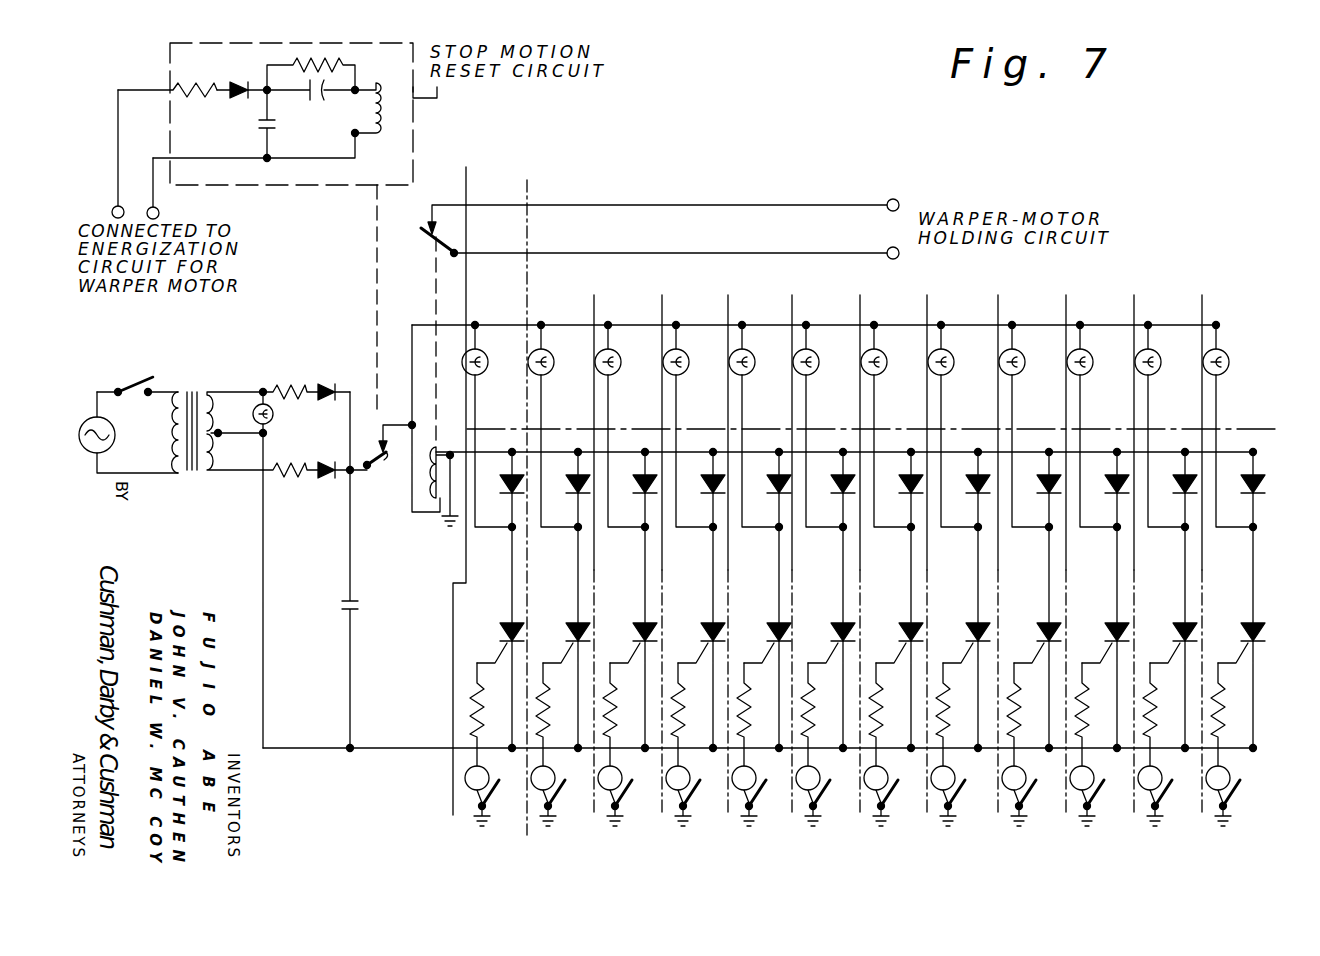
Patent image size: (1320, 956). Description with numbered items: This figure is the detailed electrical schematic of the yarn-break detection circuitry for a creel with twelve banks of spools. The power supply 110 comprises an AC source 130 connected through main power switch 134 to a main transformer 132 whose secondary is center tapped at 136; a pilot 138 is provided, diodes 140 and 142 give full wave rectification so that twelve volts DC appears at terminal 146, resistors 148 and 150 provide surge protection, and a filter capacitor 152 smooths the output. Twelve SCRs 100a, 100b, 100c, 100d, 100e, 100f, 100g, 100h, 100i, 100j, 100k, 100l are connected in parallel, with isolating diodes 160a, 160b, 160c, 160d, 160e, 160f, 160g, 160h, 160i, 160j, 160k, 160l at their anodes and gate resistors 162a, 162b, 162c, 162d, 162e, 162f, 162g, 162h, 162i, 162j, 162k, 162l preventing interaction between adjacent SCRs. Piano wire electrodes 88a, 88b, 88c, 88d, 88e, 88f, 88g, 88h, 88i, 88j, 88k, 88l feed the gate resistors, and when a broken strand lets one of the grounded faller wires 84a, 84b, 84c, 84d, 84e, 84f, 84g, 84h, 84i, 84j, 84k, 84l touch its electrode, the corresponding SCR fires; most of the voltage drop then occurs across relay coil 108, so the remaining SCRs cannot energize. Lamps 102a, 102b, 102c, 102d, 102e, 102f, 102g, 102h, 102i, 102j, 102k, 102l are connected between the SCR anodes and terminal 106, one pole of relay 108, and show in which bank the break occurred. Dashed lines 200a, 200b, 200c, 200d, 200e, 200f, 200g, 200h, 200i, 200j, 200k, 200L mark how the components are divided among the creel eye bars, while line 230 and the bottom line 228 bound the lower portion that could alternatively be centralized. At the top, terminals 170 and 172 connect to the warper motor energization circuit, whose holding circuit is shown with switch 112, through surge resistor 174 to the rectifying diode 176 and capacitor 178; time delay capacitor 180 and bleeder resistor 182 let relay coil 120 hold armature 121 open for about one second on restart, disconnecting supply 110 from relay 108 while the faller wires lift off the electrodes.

The terminal 170 is at (114, 208).
The terminal 172 is at (160, 213).
The surge resistor 174 is at (183, 77).
The diode 176 is at (238, 82).
The capacitor 178 is at (257, 127).
The time delay capacitor 180 is at (325, 98).
The bleeder resistor 182 is at (333, 62).
The relay coil 120 is at (413, 129).
The warper motor holding switch 112 is at (424, 238).
The power supply 110 is at (248, 366).
The AC source 130 is at (113, 436).
The main power switch 134 is at (150, 376).
The main transformer 132 is at (195, 478).
The center tap 136 is at (231, 464).
The pilot 138 is at (274, 419).
The resistor 148 is at (293, 384).
The diode 140 is at (334, 386).
The resistor 150 is at (284, 478).
The diode 142 is at (327, 480).
The filter capacitor 152 is at (336, 604).
The terminal 146 is at (367, 468).
The armature 121 is at (384, 474).
The terminal 106 is at (398, 422).
The relay 108 is at (425, 518).
The common return line 228 is at (455, 748).
The line 230 is at (819, 428).
The lamp 102a is at (483, 357).
The lamp 102b is at (554, 364).
The lamp 102c is at (621, 364).
The lamp 102d is at (689, 364).
The lamp 102e is at (755, 364).
The lamp 102f is at (819, 364).
The lamp 102g is at (887, 364).
The lamp 102h is at (954, 364).
The lamp 102i is at (1025, 364).
The lamp 102j is at (1093, 364).
The lamp 102k is at (1161, 364).
The lamp 102l is at (1229, 364).
The diode 160a is at (506, 491).
The diode 160b is at (572, 491).
The diode 160c is at (639, 491).
The diode 160d is at (707, 491).
The diode 160e is at (773, 491).
The diode 160f is at (837, 491).
The diode 160g is at (905, 491).
The diode 160h is at (972, 491).
The diode 160i is at (1043, 491).
The diode 160j is at (1111, 491).
The diode 160k is at (1179, 491).
The diode 160l is at (1254, 491).
The dashed line 200a is at (453, 593).
The dashed line 200b is at (551, 507).
The dashed line 200c is at (618, 555).
The dashed line 200d is at (686, 555).
The dashed line 200e is at (752, 555).
The dashed line 200f is at (814, 555).
The dashed line 200g is at (884, 555).
The dashed line 200h is at (951, 555).
The dashed line 200i is at (1019, 555).
The dashed line 200j is at (1087, 555).
The dashed line 200k is at (1158, 555).
The dashed line 200L is at (1226, 555).
The SCR 100a is at (500, 625).
The SCR 100b is at (566, 625).
The SCR 100c is at (633, 625).
The SCR 100d is at (701, 625).
The SCR 100e is at (767, 625).
The SCR 100f is at (831, 625).
The SCR 100g is at (899, 625).
The SCR 100h is at (966, 625).
The SCR 100i is at (1037, 625).
The SCR 100j is at (1105, 625).
The SCR 100k is at (1173, 625).
The SCR 100l is at (1241, 625).
The resistor 162a is at (465, 705).
The resistor 162b is at (552, 713).
The resistor 162c is at (619, 713).
The resistor 162d is at (687, 713).
The resistor 162e is at (753, 713).
The resistor 162f is at (817, 713).
The resistor 162g is at (885, 713).
The resistor 162h is at (952, 713).
The resistor 162i is at (1023, 713).
The resistor 162j is at (1091, 713).
The resistor 162k is at (1159, 713).
The resistor 162l is at (1227, 713).
The electrode 88a is at (486, 775).
The electrode 88b is at (552, 775).
The electrode 88c is at (619, 775).
The electrode 88d is at (687, 775).
The electrode 88e is at (753, 775).
The electrode 88f is at (817, 775).
The electrode 88g is at (885, 775).
The electrode 88h is at (952, 775).
The electrode 88i is at (1023, 775).
The electrode 88j is at (1091, 775).
The electrode 88k is at (1159, 775).
The electrode 88l is at (1227, 775).
The faller wire 84a is at (500, 803).
The faller wire 84b is at (566, 803).
The faller wire 84c is at (632, 803).
The faller wire 84d is at (701, 803).
The faller wire 84e is at (767, 803).
The faller wire 84f is at (830, 803).
The faller wire 84g is at (899, 803).
The faller wire 84h is at (966, 803).
The faller wire 84i is at (1034, 803).
The faller wire 84j is at (1102, 803).
The faller wire 84k is at (1173, 803).
The faller wire 84l is at (1238, 803).